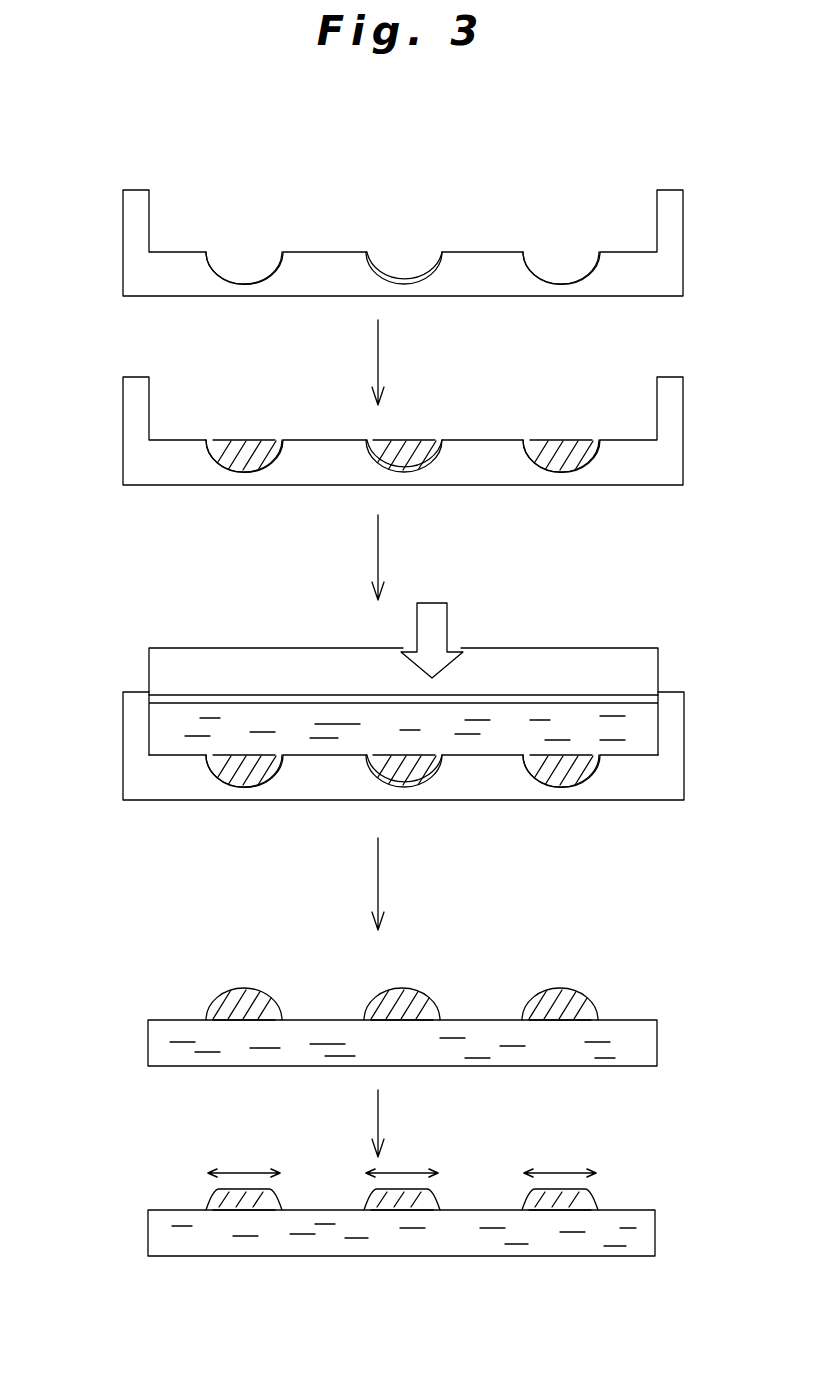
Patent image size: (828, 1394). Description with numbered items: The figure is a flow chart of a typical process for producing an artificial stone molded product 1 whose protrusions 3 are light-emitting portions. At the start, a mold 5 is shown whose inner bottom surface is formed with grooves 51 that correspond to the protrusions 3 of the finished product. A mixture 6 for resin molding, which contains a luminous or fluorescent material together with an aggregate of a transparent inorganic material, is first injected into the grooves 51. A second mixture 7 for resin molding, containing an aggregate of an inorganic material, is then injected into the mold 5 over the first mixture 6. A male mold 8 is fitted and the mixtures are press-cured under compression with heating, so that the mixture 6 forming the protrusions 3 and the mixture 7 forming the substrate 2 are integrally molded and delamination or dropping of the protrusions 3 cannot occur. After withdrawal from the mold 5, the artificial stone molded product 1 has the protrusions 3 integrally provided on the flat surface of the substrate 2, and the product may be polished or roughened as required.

The artificial stone molded product 1 is at (436, 1091).
The substrate 2 is at (640, 1045).
The protrusions 3 is at (258, 988).
The mold 5 is at (135, 240).
The grooves 51 is at (400, 262).
The mixture for resin molding 6 is at (250, 455).
The mixture for resin molding 7 is at (577, 722).
The male mold 8 is at (205, 660).